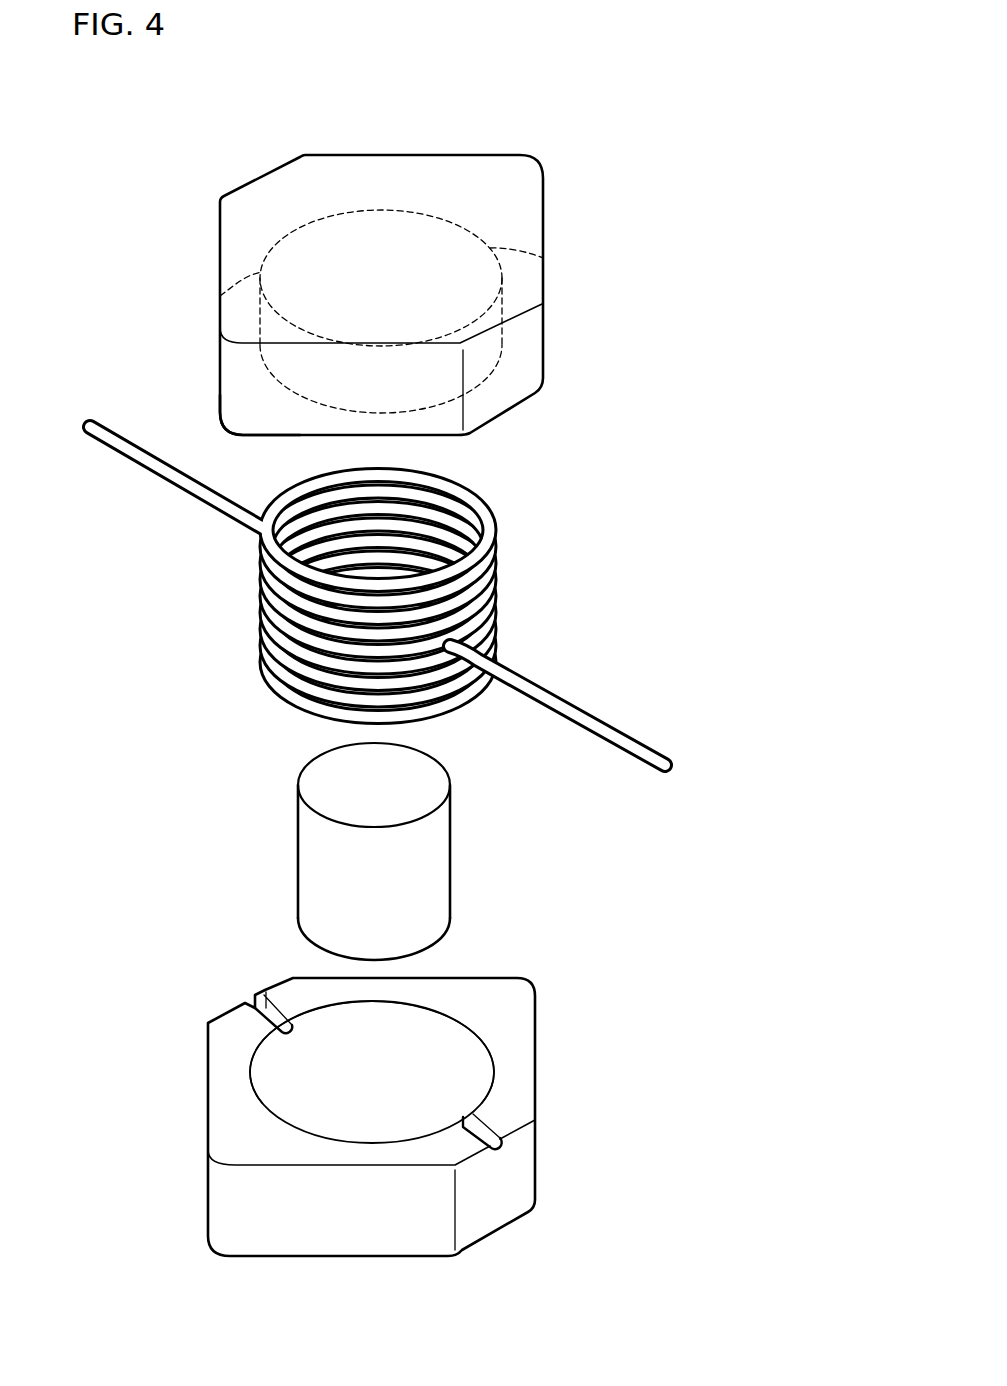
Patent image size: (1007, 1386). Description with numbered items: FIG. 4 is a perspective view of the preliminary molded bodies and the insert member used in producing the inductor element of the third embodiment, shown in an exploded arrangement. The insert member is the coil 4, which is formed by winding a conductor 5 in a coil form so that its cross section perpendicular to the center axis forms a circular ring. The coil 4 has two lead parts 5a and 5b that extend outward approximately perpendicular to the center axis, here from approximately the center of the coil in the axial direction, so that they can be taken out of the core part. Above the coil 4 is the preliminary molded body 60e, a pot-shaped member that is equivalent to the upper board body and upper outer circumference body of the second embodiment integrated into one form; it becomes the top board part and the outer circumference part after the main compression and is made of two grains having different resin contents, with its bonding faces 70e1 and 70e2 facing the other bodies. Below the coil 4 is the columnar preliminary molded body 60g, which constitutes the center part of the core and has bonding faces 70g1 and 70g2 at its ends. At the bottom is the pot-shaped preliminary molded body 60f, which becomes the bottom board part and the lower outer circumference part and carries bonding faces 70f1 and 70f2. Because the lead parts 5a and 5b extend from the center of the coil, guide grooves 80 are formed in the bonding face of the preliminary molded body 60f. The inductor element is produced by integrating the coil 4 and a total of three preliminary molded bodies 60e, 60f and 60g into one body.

The coil 4 is at (368, 592).
The conductor 5 is at (368, 599).
The lead part 5a is at (143, 466).
The lead part 5b is at (596, 720).
The preliminary molded body 60e is at (360, 290).
The bonding face 70e1 is at (484, 316).
The bonding face 70e2 is at (253, 440).
The preliminary molded body 60g is at (447, 851).
The bonding face 70g1 is at (415, 782).
The bonding face 70g2 is at (423, 948).
The preliminary molded body 60f is at (351, 1087).
The bonding face 70f1 is at (315, 1113).
The bonding face 70f2 is at (515, 1050).
The guide groove 80 is at (266, 1008).